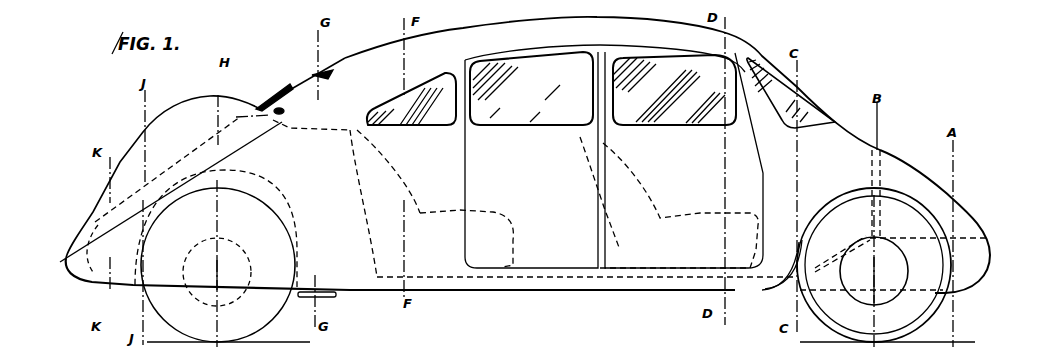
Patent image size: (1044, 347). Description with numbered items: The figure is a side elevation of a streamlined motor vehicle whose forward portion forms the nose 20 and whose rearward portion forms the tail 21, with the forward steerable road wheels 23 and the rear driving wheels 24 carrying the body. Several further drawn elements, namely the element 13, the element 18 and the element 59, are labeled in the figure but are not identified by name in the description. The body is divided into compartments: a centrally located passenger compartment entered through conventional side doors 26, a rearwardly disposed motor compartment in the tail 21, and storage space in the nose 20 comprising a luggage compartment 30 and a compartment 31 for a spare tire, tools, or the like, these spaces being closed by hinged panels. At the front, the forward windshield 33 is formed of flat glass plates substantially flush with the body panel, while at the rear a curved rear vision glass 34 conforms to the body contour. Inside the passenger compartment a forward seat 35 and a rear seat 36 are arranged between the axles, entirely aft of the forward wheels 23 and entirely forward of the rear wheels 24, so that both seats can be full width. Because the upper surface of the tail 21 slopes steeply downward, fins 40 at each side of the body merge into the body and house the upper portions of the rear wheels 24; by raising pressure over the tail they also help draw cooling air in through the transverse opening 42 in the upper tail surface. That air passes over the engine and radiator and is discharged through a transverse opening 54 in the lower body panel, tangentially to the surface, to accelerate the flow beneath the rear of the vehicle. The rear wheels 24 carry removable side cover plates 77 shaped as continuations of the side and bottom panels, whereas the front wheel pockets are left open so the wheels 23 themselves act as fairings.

The cowl joint 13 is at (291, 110).
The body front 18 is at (387, 206).
The nose 20 is at (977, 215).
The tail 21 is at (78, 270).
The forward steerable road wheels 23 is at (925, 308).
The rear driving wheels 24 is at (170, 318).
The doors 26 is at (567, 257).
The luggage compartment 30 is at (933, 187).
The spare tire compartment 31 is at (978, 252).
The forward windshield 33 is at (805, 104).
The rear vision glass 34 is at (290, 86).
The forward seat 35 is at (693, 218).
The rear seat 36 is at (495, 211).
The fins 40 is at (139, 148).
The slot or opening 42 is at (264, 103).
The transversely extending opening 54 is at (133, 293).
The front seat back 59 is at (356, 213).
The side cover plates 77 is at (227, 203).